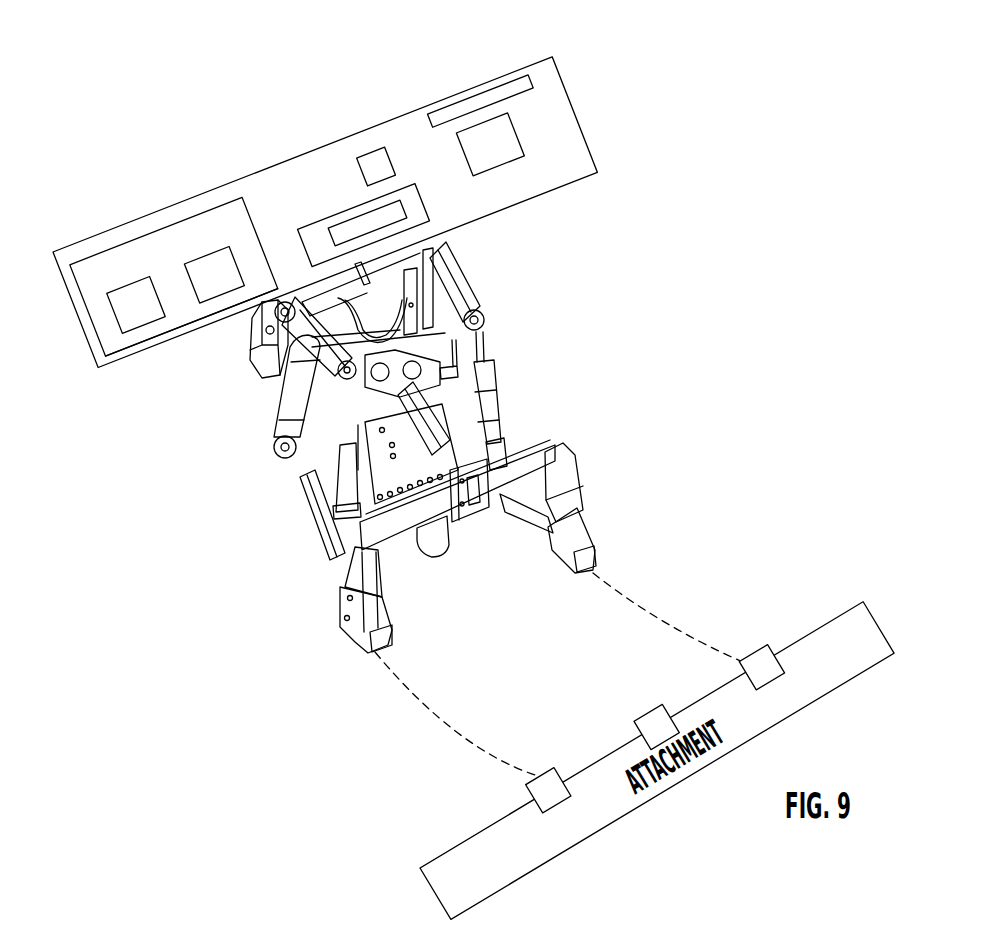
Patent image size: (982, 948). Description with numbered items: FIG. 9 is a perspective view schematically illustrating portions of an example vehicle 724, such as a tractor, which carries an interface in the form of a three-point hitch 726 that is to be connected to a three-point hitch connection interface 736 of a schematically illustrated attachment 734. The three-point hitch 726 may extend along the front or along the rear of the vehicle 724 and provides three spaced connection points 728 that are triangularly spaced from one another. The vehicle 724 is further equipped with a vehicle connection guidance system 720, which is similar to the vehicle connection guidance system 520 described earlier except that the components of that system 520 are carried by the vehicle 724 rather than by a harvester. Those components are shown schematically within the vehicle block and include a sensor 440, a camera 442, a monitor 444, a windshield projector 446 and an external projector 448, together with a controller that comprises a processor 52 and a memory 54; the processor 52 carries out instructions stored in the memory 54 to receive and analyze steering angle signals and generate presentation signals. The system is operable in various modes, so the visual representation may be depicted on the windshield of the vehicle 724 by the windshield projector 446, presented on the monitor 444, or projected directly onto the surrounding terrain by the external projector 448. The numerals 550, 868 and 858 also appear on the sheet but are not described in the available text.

The vehicle connection guidance system 720 is at (769, 92).
The vehicle 724 is at (398, 116).
The three-point hitch 726 is at (478, 310).
The connection points 728 is at (505, 478).
The attachment 734 is at (425, 880).
The three-point hitch connection interface 736 is at (762, 647).
The vehicle connection guidance system 520 is at (208, 210).
The control module 550 is at (150, 339).
The processor 52 is at (202, 262).
The memory 54 is at (118, 292).
The sensor 440 is at (520, 143).
The camera 442 is at (423, 188).
The monitor 444 is at (514, 80).
The windshield projector 446 is at (362, 152).
The external projector 448 is at (425, 203).
The coupling pin 868 is at (505, 947).
The attachment frame 858 is at (742, 947).